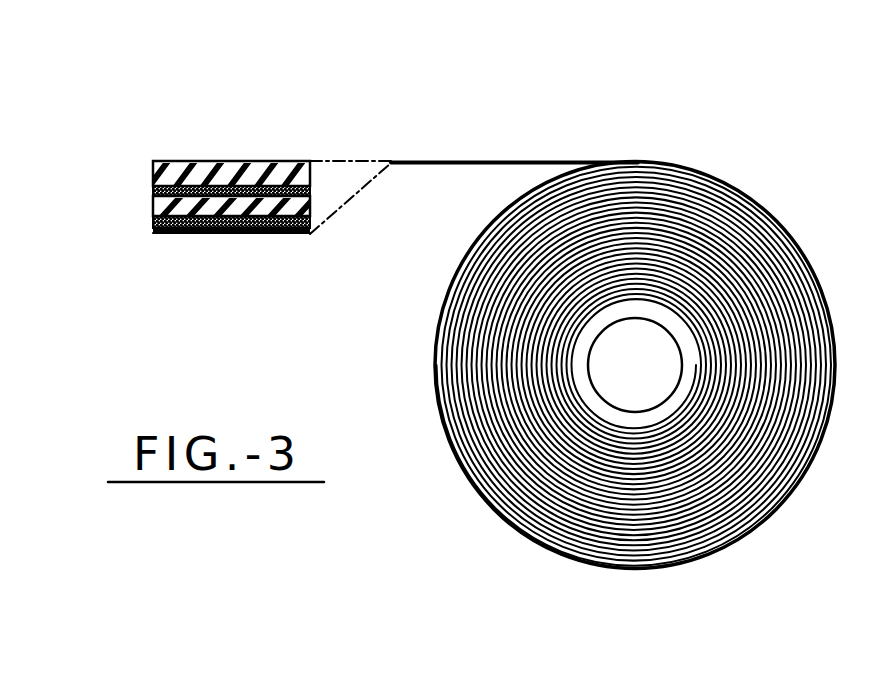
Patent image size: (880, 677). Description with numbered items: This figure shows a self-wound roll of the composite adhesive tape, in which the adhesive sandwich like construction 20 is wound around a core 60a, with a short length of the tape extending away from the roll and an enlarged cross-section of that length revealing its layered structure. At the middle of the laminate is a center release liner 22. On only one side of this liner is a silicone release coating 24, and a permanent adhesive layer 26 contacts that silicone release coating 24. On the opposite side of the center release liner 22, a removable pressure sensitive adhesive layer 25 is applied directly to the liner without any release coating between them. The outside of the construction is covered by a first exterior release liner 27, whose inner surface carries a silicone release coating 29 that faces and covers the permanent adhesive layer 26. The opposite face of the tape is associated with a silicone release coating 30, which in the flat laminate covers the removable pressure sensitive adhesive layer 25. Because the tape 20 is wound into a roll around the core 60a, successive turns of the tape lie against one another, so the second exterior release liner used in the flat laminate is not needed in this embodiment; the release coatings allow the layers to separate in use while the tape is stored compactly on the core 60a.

The adhesive sandwich like construction 20 is at (474, 146).
The center release liner 22 is at (147, 200).
The silicone release coating 24 is at (147, 212).
The removable pressure sensitive adhesive layer 25 is at (146, 186).
The permanent adhesive layer 26 is at (147, 222).
The first exterior release liner 27 is at (181, 153).
The silicone release coating 29 is at (145, 180).
The silicone release coating 30 is at (150, 228).
The core 60a is at (608, 342).